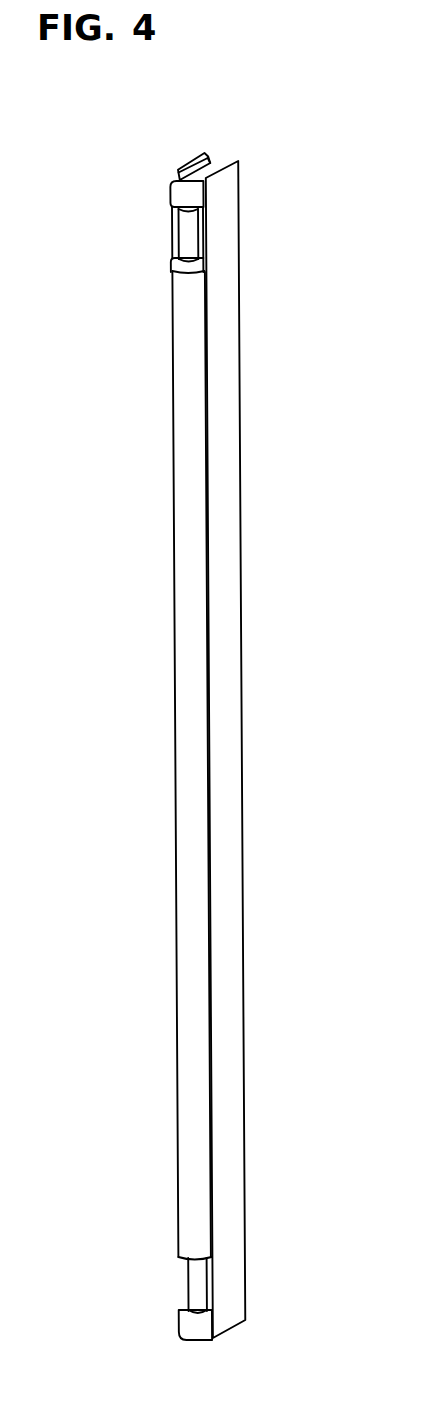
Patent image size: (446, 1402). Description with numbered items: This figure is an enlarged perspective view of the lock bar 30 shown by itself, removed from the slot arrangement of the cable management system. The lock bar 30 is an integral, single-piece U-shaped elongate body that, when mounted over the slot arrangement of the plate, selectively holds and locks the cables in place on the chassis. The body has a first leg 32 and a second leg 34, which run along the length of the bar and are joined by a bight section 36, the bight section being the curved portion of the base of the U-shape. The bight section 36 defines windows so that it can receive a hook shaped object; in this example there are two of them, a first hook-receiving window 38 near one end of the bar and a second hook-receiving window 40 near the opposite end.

The lock bar 30 is at (241, 273).
The first leg 32 is at (212, 162).
The second leg 34 is at (197, 158).
The bight section 36 is at (176, 181).
The first hook-receiving window 38 is at (178, 224).
The second hook-receiving window 40 is at (186, 1288).